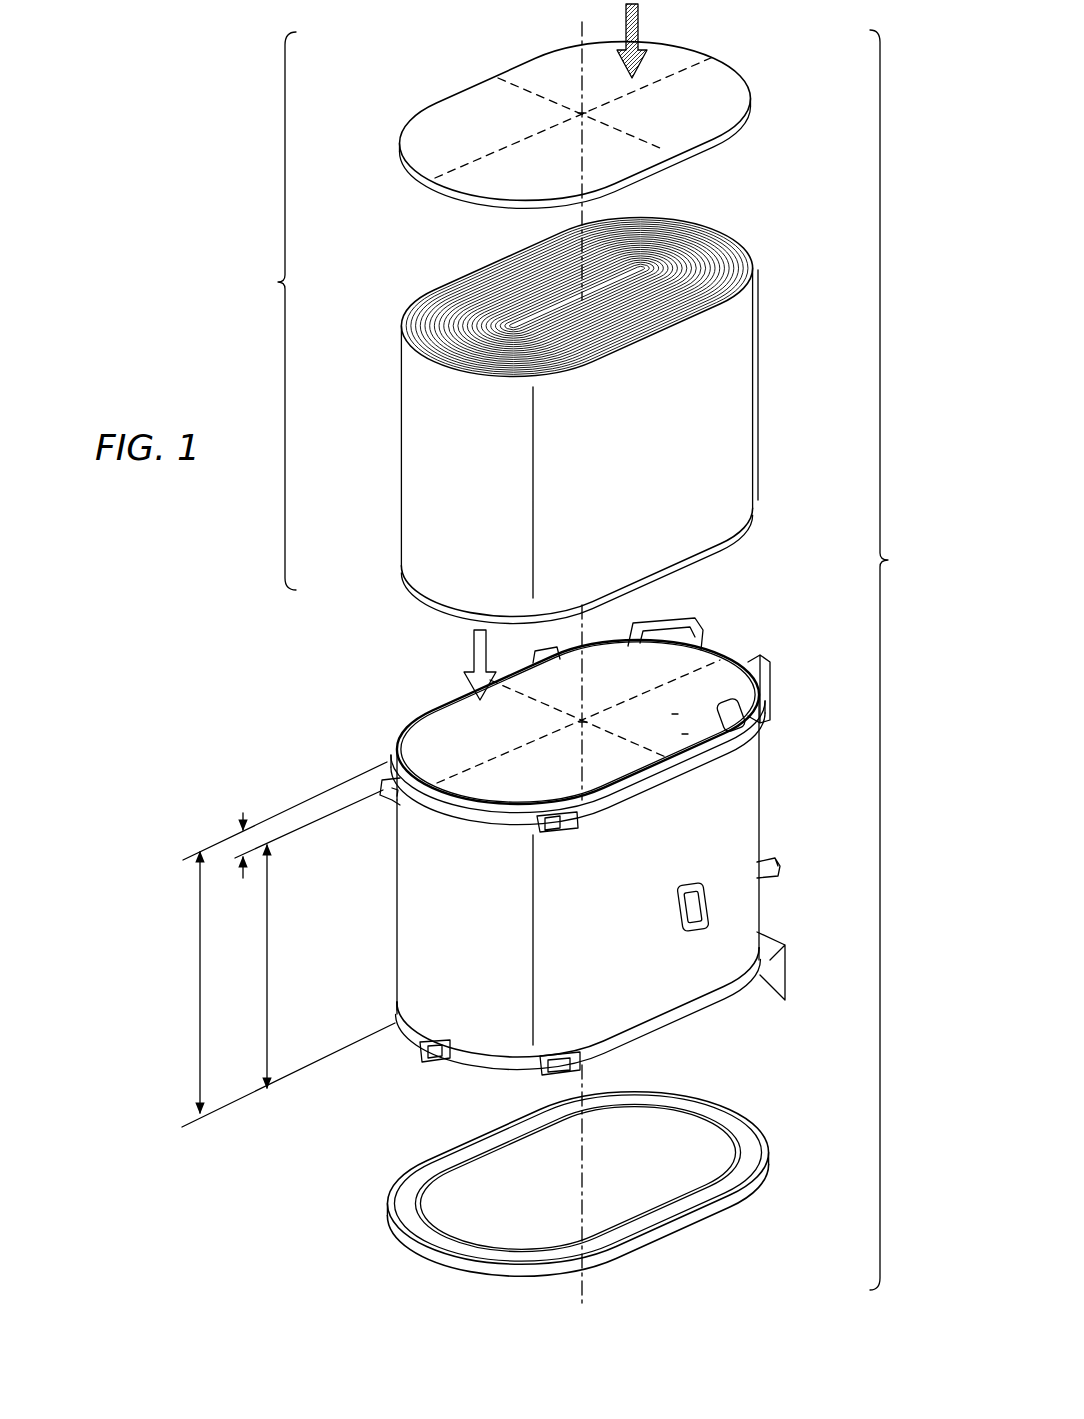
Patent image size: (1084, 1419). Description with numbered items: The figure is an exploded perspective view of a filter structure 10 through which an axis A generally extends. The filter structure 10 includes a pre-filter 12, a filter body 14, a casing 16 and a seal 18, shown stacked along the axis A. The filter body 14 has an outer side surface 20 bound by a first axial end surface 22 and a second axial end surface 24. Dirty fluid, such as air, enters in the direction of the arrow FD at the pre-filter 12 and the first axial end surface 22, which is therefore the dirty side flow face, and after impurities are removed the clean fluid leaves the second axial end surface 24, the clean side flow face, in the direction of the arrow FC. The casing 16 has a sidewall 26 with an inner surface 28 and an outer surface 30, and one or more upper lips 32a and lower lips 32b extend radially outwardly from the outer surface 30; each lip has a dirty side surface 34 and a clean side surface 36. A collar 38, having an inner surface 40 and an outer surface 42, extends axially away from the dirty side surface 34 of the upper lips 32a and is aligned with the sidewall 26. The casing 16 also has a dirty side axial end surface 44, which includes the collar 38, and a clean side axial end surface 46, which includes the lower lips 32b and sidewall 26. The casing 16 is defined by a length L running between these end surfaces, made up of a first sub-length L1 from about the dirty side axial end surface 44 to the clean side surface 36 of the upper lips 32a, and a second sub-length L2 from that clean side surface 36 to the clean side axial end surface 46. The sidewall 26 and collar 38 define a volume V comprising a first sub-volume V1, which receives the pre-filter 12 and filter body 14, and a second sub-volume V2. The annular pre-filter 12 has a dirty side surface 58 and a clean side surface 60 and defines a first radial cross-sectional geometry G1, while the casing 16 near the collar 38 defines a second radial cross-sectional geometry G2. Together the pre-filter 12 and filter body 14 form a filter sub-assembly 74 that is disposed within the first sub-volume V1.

The filter structure 10 is at (893, 660).
The pre-filter 12 is at (797, 64).
The filter body 14 is at (797, 236).
The casing 16 is at (838, 660).
The seal 18 is at (810, 1125).
The outer side surface 20 is at (408, 470).
The first axial end surface 22 is at (446, 282).
The second axial end surface 24 is at (716, 549).
The sidewall 26 is at (398, 732).
The inner surface 28 is at (437, 728).
The outer surface 30 is at (412, 920).
The upper lip 32a is at (384, 748).
The lower lip 32b is at (398, 1018).
The dirty side surface 34 is at (386, 760).
The clean side surface 36 is at (396, 802).
The collar 38 is at (700, 768).
The inner surface 40 is at (752, 722).
The outer surface 42 is at (700, 780).
The dirty side axial end surface 44 is at (455, 696).
The clean side axial end surface 46 is at (712, 1005).
The dirty side surface 58 is at (447, 118).
The clean side surface 60 is at (716, 140).
The filter sub-assembly 74 is at (270, 311).
The axis A is at (579, 667).
The first radial cross-sectional geometry G1 is at (580, 108).
The second radial cross-sectional geometry G2 is at (586, 718).
The volume V is at (786, 600).
The first sub-volume V1 is at (686, 732).
The second sub-volume V2 is at (676, 712).
The dirty fluid FD is at (646, 39).
The clean fluid FC is at (490, 665).
The length L is at (288, 944).
The first sub-length L1 is at (243, 832).
The second sub-length L2 is at (309, 939).